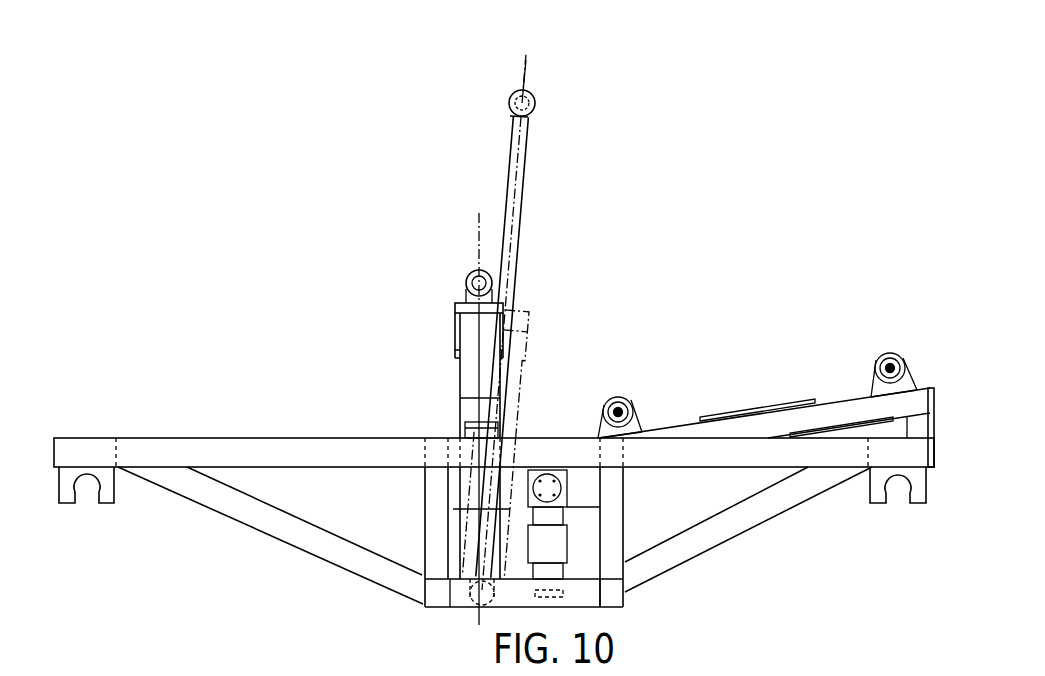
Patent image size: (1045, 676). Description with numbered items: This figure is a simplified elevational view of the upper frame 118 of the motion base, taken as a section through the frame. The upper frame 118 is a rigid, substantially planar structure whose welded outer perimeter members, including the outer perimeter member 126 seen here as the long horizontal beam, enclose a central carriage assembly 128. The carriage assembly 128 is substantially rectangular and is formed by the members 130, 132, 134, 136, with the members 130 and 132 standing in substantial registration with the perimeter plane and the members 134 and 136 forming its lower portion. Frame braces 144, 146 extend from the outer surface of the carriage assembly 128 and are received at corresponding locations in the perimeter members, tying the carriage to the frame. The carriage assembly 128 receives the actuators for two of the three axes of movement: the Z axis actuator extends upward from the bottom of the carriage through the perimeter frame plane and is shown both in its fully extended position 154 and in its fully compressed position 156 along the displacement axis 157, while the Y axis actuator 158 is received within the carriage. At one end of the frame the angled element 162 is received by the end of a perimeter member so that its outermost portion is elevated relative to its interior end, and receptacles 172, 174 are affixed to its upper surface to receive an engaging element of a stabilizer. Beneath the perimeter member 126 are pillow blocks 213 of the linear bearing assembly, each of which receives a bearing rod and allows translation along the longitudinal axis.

The upper frame 118 is at (268, 412).
The outer perimeter member 126 is at (202, 453).
The central carriage assembly 128 is at (573, 415).
The carriage assembly member 130 is at (425, 483).
The carriage assembly member 132 is at (617, 474).
The carriage assembly member 134 is at (422, 597).
The carriage assembly member 136 is at (625, 597).
The frame brace 144 is at (735, 520).
The frame brace 146 is at (278, 536).
The Z actuator fully extended position 154 is at (522, 178).
The Z actuator fully compressed position 156 is at (467, 295).
The displacement axis 157 is at (478, 232).
The Y axis actuator 158 is at (562, 536).
The second angled element 162 is at (830, 407).
The receptacle 172 is at (908, 365).
The receptacle 174 is at (635, 407).
The pillow block 213 is at (105, 478).